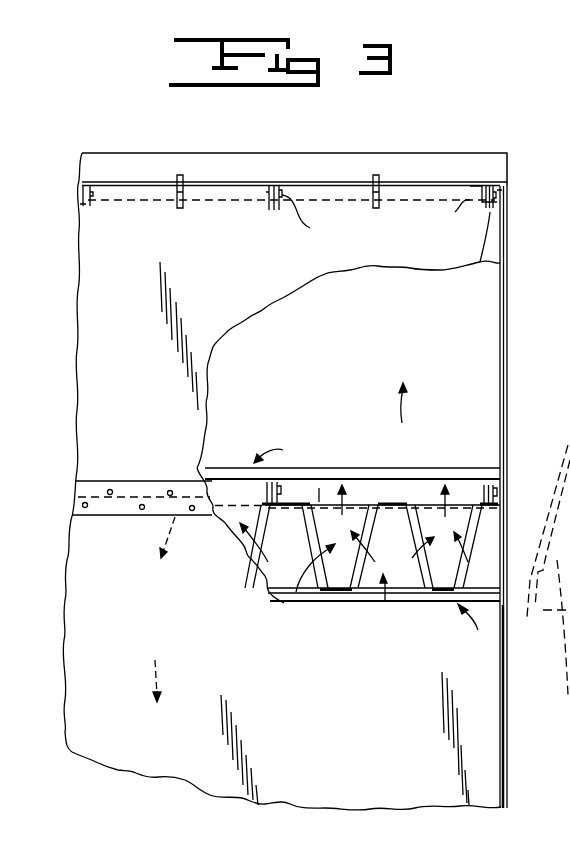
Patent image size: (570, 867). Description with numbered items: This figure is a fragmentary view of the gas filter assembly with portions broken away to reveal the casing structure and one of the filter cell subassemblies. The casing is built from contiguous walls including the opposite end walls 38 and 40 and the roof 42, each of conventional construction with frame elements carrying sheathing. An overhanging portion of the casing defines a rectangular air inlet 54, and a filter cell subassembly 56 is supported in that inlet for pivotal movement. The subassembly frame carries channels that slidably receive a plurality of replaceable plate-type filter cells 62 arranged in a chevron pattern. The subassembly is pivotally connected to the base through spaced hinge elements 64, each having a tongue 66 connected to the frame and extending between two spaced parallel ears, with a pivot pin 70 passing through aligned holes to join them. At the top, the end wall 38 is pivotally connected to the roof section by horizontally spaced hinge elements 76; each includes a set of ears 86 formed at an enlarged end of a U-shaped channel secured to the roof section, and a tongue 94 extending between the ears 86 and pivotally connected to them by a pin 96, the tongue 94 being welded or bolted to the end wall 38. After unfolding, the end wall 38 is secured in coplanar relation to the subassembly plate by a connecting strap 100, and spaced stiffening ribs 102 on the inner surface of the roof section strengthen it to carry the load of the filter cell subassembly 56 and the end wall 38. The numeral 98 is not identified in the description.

The end wall 38 is at (78, 312).
The end wall 40 is at (507, 240).
The roof 42 is at (312, 157).
The air inlet 54 is at (432, 600).
The filter cell subassembly 56 is at (319, 504).
The filter cell 62 is at (415, 580).
The hinge element 64 is at (263, 490).
The tongue 66 is at (485, 484).
The pivot pin 70 is at (459, 469).
The hinge element 76 is at (89, 204).
The ears 86 is at (484, 186).
The tongue 94 is at (488, 260).
The pin 96 is at (478, 210).
The panel 98 is at (558, 286).
The connecting strap 100 is at (132, 517).
The stiffening rib 102 is at (182, 201).